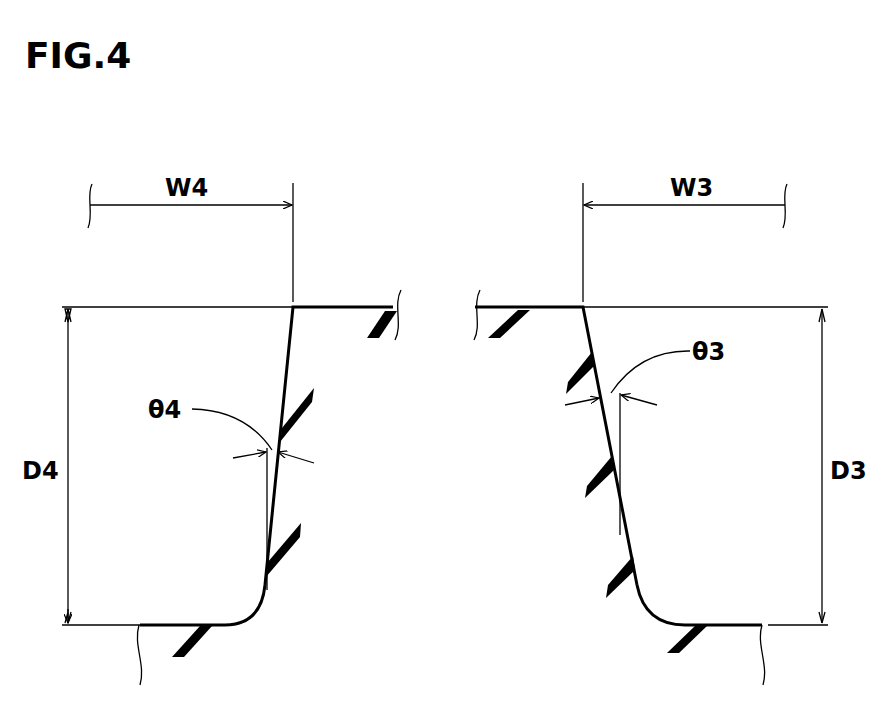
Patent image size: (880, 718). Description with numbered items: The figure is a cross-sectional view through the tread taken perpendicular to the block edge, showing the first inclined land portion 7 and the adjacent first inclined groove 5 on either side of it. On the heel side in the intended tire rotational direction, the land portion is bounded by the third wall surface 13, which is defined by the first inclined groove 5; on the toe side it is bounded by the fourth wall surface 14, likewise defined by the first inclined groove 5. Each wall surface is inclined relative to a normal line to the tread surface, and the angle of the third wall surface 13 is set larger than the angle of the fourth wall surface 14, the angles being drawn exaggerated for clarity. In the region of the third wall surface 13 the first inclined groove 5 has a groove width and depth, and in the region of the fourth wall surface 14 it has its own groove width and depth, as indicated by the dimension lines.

The first inclined groove 5 is at (204, 598).
The first inclined land portion 7 is at (348, 508).
The third wall surface 13 is at (628, 522).
The fourth wall surface 14 is at (285, 372).